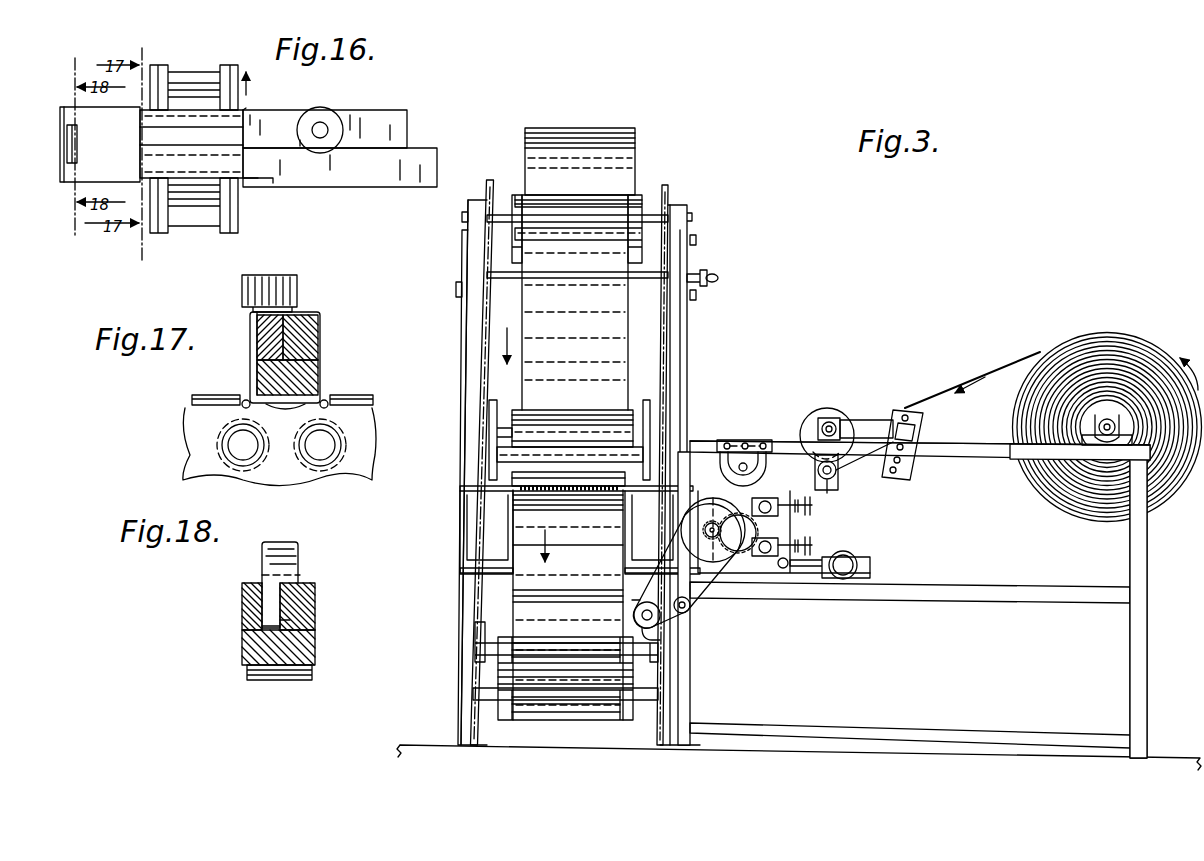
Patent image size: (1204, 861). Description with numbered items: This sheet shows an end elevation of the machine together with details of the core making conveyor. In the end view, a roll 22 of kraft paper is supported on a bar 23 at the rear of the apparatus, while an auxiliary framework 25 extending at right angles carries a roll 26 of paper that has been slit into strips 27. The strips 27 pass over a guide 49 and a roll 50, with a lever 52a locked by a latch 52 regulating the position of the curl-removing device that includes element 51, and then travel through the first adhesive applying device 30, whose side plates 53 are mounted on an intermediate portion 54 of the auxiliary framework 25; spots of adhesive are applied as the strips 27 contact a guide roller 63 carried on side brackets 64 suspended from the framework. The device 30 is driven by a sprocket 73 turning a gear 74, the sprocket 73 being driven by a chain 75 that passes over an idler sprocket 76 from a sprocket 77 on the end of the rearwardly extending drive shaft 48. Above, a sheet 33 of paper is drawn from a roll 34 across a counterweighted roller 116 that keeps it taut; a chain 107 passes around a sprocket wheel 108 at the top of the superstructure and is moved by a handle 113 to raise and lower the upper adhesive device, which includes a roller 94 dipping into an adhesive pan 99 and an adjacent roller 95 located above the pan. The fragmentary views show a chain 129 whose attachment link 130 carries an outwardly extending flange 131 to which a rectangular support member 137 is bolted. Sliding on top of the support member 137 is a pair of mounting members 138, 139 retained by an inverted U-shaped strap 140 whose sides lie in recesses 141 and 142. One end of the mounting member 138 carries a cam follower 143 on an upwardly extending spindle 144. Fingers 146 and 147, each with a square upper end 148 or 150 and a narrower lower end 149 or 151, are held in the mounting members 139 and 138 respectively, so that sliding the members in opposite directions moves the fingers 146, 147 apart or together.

In FIG. 16, the finger 147 is at (64, 150).
In FIG. 16, the finger 146 is at (80, 137).
In FIG. 18, the finger 146 is at (302, 548).
In FIG. 16, the inverted U-shaped metal strap 140 is at (240, 133).
In FIG. 17, the inverted U-shaped metal strap 140 is at (304, 312).
In FIG. 16, the attachment link 130 is at (244, 72).
In FIG. 17, the attachment link 130 is at (282, 470).
In FIG. 16, the chain 129 is at (190, 198).
In FIG. 16, the mounting member 138 is at (360, 112).
In FIG. 17, the mounting member 138 is at (272, 335).
In FIG. 18, the mounting member 138 is at (305, 600).
In FIG. 16, the mounting member 139 is at (330, 183).
In FIG. 17, the mounting member 139 is at (320, 328).
In FIG. 18, the mounting member 139 is at (250, 597).
In FIG. 16, the cam follower 143 is at (322, 108).
In FIG. 17, the cam follower 143 is at (278, 273).
In FIG. 16, the spindle 144 is at (324, 133).
In FIG. 16, the recess 141 is at (247, 107).
In FIG. 16, the recess 142 is at (252, 182).
In FIG. 17, the support member 137 is at (293, 382).
In FIG. 18, the support member 137 is at (290, 656).
In FIG. 17, the flange 131 is at (350, 395).
In FIG. 18, the flange 131 is at (265, 672).
In FIG. 18, the upper end 148 is at (262, 565).
In FIG. 18, the upper end 150 is at (270, 585).
In FIG. 18, the lower end 149 is at (268, 615).
In FIG. 18, the lower end 151 is at (285, 620).
In FIG. 3, the roll 34 is at (612, 140).
In FIG. 3, the sprocket wheel 108 is at (670, 195).
In FIG. 3, the counterweighted roller 116 is at (636, 194).
In FIG. 3, the handle 113 is at (716, 267).
In FIG. 3, the sheet of paper 33 is at (563, 362).
In FIG. 3, the chain 107 is at (668, 353).
In FIG. 3, the roller 95 is at (525, 412).
In FIG. 3, the roller 94 is at (562, 438).
In FIG. 3, the adhesive pan 99 is at (590, 453).
In FIG. 3, the roll of kraft paper 22 is at (562, 556).
In FIG. 3, the bar 23 is at (480, 585).
In FIG. 3, the intermediate portion 54 is at (980, 582).
In FIG. 3, the roll 26 is at (1146, 372).
In FIG. 3, the strips 27 is at (1020, 376).
In FIG. 3, the auxiliary framework 25 is at (948, 443).
In FIG. 3, the guide roller 63 is at (712, 455).
In FIG. 3, the side bracket 64 is at (752, 452).
In FIG. 3, the roll 50 is at (824, 416).
In FIG. 3, the lever 52a is at (872, 419).
In FIG. 3, the latch 52 is at (915, 410).
In FIG. 3, the side plate 53 is at (780, 493).
In FIG. 3, the guide 49 is at (842, 472).
In FIG. 3, the curl removing device element 51 is at (828, 488).
In FIG. 3, the first adhesive applying device 30 is at (797, 528).
In FIG. 3, the sprocket 73 is at (722, 547).
In FIG. 3, the gear 74 is at (698, 530).
In FIG. 3, the chain 75 is at (661, 622).
In FIG. 3, the idler sprocket 76 is at (691, 610).
In FIG. 3, the sprocket 77 is at (660, 636).
In FIG. 3, the drive shaft 48 is at (640, 612).